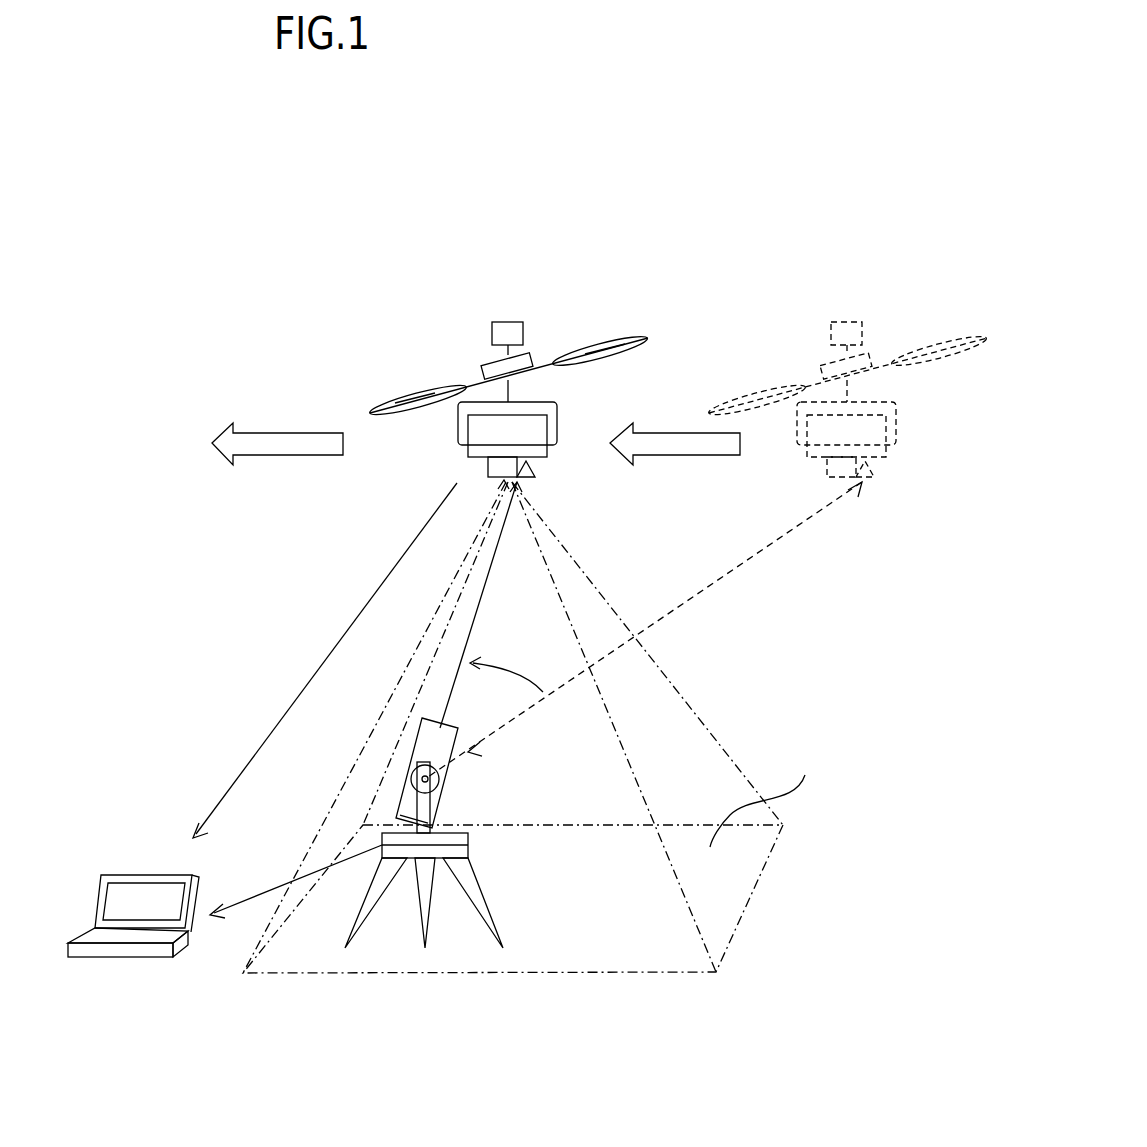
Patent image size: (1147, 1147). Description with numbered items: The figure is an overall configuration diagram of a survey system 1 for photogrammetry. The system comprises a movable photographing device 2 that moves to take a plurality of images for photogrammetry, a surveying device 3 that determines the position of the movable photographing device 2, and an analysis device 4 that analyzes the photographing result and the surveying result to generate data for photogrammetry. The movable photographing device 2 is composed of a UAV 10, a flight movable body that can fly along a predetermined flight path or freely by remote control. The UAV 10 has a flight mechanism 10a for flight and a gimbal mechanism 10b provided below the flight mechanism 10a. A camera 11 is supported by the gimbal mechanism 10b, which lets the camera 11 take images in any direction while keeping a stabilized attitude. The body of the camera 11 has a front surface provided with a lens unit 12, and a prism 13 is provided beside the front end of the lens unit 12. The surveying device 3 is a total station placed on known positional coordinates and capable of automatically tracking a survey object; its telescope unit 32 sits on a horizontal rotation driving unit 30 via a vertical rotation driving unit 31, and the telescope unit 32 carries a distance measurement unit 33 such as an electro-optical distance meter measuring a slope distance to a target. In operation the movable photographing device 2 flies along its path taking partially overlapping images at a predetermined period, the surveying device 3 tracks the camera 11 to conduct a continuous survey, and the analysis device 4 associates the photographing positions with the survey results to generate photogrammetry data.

The survey system 1 is at (631, 214).
The movable photographing device 2 is at (440, 312).
The surveying device 3 is at (356, 768).
The analysis device 4 is at (148, 840).
The UAV 10 is at (543, 350).
The flight mechanism 10a is at (488, 363).
The gimbal mechanism 10b is at (458, 418).
The camera 11 is at (547, 455).
The lens unit 12 is at (487, 465).
The prism 13 is at (533, 481).
The horizontal rotation driving unit 30 is at (468, 842).
The vertical rotation driving unit 31 is at (407, 783).
The telescope unit 32 is at (463, 768).
The distance measurement unit 33 is at (414, 819).